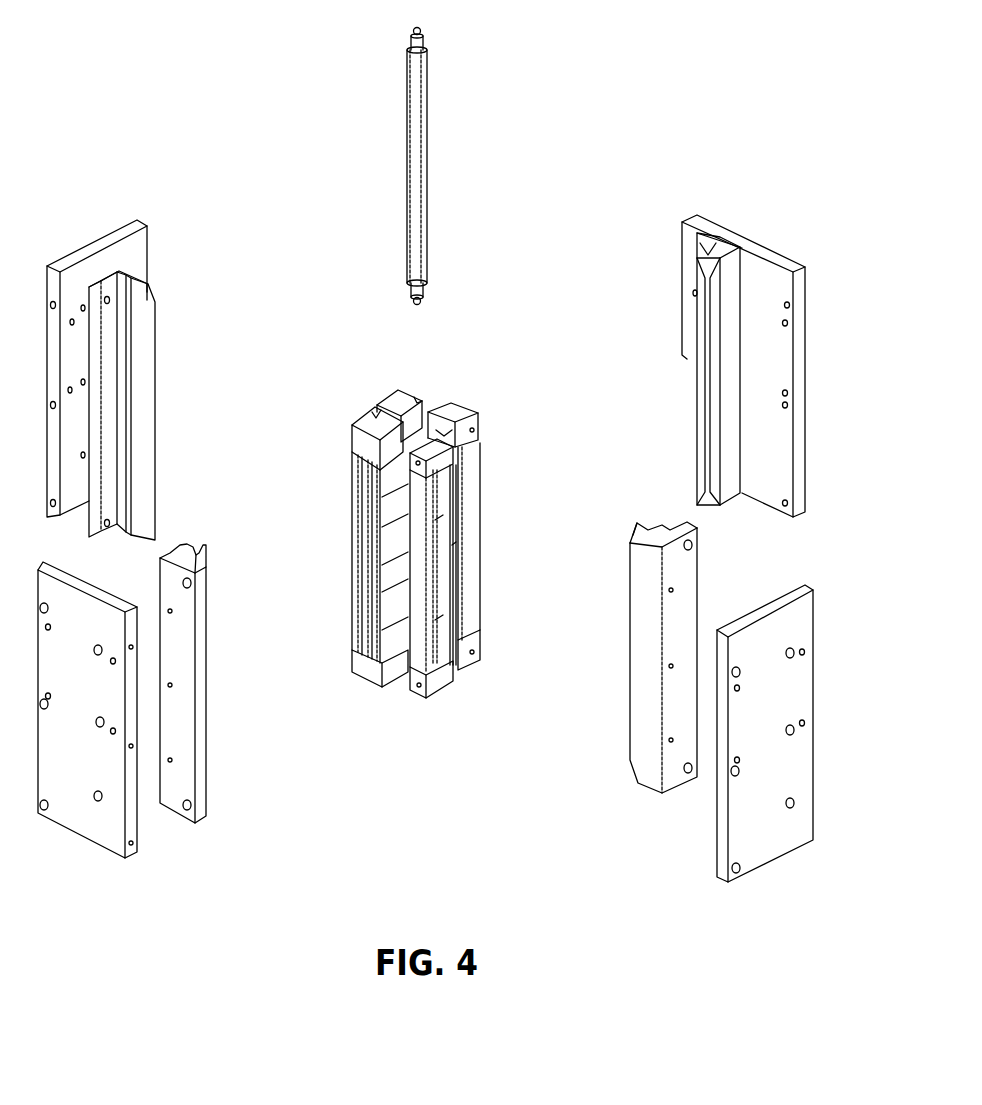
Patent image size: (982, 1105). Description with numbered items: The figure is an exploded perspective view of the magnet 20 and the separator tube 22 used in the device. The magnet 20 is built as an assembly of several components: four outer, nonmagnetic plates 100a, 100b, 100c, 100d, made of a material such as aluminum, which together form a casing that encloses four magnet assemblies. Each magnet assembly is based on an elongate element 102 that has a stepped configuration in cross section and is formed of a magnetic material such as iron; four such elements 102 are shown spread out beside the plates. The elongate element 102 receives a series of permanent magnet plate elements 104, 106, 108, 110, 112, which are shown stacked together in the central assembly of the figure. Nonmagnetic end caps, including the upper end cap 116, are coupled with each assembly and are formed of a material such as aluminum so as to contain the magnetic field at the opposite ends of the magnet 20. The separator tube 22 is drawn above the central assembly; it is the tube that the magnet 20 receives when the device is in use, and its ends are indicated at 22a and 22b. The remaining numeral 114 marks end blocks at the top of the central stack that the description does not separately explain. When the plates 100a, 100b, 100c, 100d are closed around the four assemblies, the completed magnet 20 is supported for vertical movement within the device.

The magnet 20 is at (186, 68).
The separator tube 22 is at (407, 158).
The rod first end 22a is at (407, 293).
The rod second end 22b is at (406, 42).
The outer nonmagnetic plate 100a is at (142, 222).
The outer nonmagnetic plate 100b is at (720, 823).
The outer nonmagnetic plate 100c is at (753, 243).
The outer nonmagnetic plate 100d is at (81, 825).
The elongate element 102 is at (157, 337).
The permanent magnet plate element 104 is at (352, 520).
The permanent magnet plate element 106 is at (362, 566).
The permanent magnet plate element 108 is at (372, 614).
The permanent magnet plate element 110 is at (375, 646).
The permanent magnet plate element 112 is at (402, 563).
The upper end block 114 is at (418, 472).
The upper end cap 116 is at (410, 692).